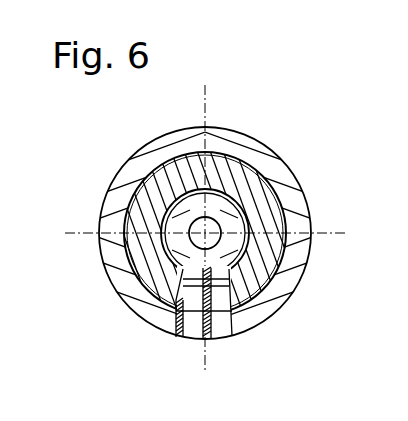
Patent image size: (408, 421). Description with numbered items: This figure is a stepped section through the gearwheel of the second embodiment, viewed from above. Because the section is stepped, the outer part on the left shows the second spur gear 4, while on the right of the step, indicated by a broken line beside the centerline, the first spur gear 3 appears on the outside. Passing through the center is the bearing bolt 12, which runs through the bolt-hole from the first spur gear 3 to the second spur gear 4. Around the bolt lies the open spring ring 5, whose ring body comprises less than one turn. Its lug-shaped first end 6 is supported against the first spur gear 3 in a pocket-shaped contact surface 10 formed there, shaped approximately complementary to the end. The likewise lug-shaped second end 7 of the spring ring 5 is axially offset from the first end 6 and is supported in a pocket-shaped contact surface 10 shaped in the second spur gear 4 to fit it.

The first spur gear 3 is at (297, 280).
The second spur gear 4 is at (122, 192).
The spring ring 5 is at (268, 177).
The first end 6 is at (250, 315).
The second end 7 is at (135, 303).
The contact surface 10 is at (172, 332).
The bearing bolt 12 is at (222, 200).